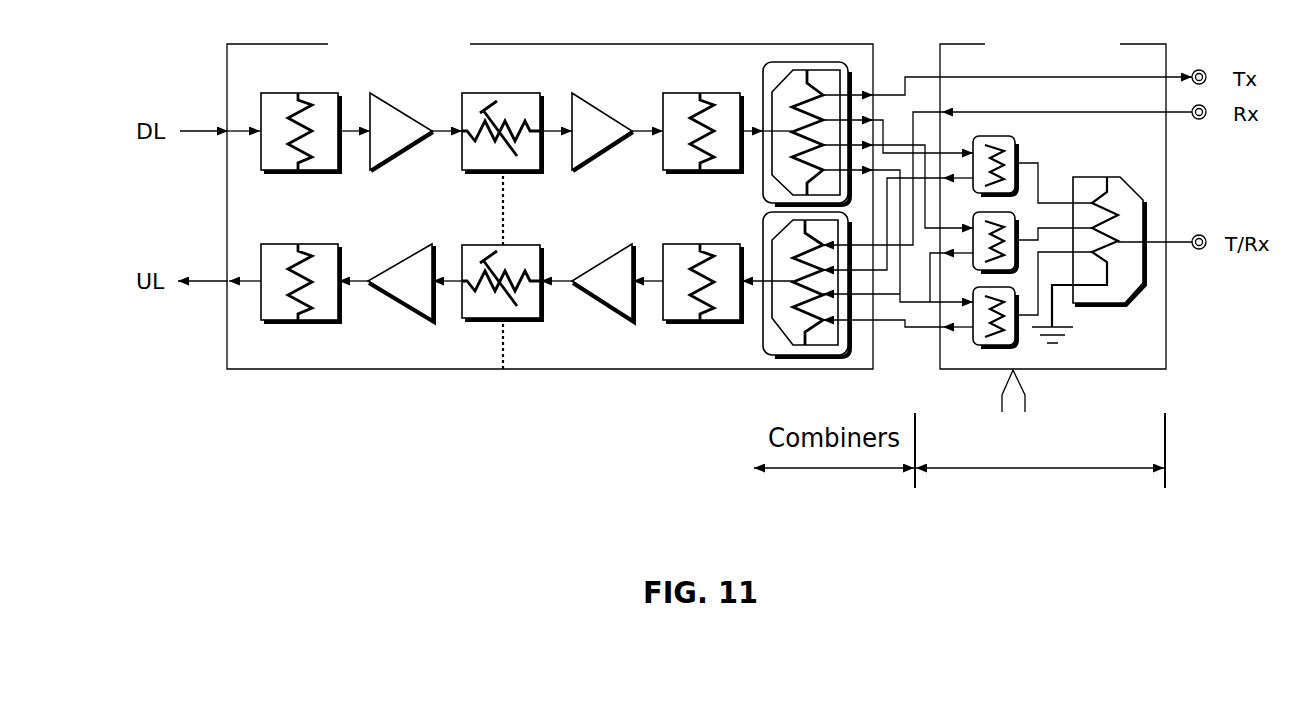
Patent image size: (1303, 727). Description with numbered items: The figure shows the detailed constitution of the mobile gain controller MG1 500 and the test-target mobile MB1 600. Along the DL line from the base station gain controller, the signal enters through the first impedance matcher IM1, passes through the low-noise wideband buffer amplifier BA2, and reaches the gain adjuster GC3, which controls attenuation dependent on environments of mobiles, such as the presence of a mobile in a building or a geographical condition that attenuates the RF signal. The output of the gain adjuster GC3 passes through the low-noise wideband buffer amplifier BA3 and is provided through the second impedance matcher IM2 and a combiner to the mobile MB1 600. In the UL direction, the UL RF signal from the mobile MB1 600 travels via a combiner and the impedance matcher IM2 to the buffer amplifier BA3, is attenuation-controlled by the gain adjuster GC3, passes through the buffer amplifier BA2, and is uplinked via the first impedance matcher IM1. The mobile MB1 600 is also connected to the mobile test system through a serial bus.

The mobile gain controller MG1 500 is at (550, 196).
The mobile MB1 600 is at (1054, 255).
The first impedance matcher IM1 is at (363, 488).
The low-noise wideband buffer amplifier BA2 is at (449, 488).
The gain adjuster GC3 is at (557, 488).
The low-noise wideband buffer amplifier BA3 is at (644, 488).
The second impedance matcher IM2 is at (753, 488).